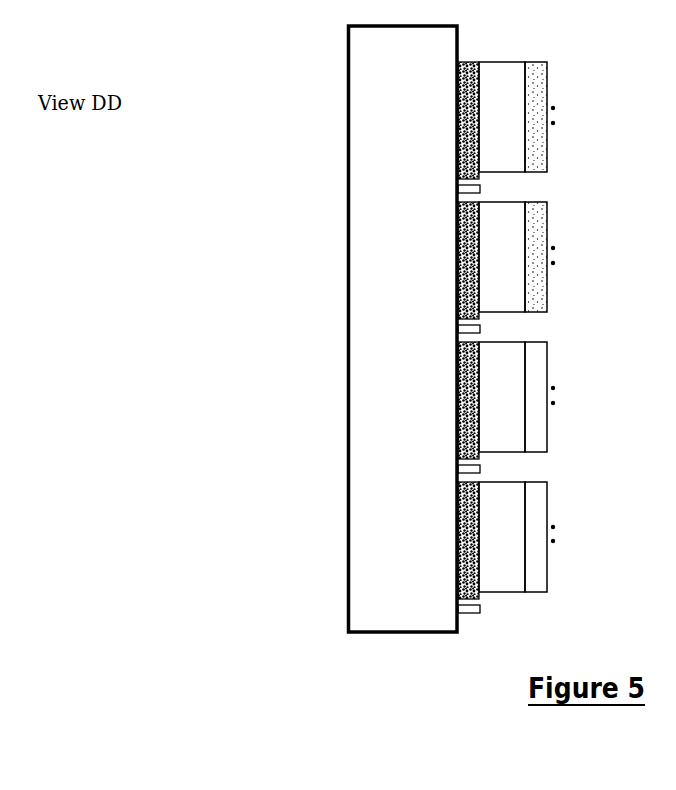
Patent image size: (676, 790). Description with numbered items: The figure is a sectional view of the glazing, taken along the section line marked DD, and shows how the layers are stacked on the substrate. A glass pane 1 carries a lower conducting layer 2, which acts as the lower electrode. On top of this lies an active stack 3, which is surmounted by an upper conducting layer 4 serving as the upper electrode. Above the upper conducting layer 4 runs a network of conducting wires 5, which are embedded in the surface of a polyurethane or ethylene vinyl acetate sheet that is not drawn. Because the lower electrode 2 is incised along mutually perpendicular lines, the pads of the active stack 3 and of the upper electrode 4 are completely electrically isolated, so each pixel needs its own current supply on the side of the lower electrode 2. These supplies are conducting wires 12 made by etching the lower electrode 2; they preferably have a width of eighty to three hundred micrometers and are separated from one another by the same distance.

The glass pane 1 is at (386, 623).
The lower conducting layer 2 is at (480, 502).
The active stack 3 is at (508, 577).
The upper conducting layer 4 is at (539, 577).
The network of conducting wires 5 is at (559, 541).
The conducting wires 12 is at (475, 613).